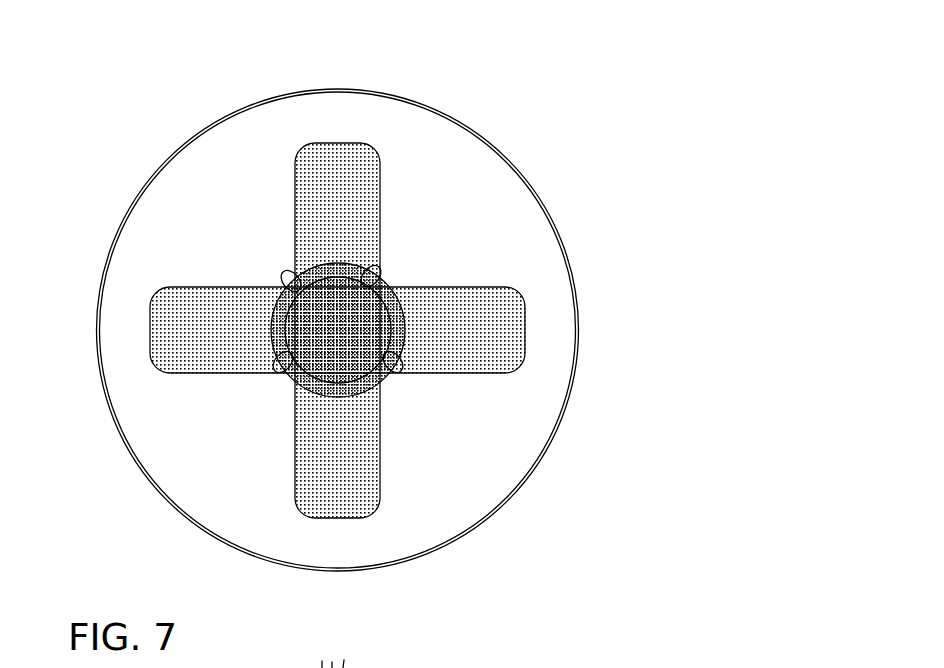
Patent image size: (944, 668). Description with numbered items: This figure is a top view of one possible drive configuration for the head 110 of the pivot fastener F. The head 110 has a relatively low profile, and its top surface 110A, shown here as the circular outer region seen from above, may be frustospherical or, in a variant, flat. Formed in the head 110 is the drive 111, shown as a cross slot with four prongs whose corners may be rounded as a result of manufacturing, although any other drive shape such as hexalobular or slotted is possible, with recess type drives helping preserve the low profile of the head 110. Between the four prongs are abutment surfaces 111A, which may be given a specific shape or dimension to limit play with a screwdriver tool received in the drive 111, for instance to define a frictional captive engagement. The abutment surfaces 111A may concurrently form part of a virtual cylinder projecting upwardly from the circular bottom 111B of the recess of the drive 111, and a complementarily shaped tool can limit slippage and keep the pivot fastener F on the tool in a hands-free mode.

The head 110 is at (103, 258).
The top surface 110A is at (185, 187).
The drive 111 is at (353, 168).
The abutment surfaces 111A is at (438, 179).
The circular bottom 111B is at (397, 292).
The pivot fastener F is at (577, 163).